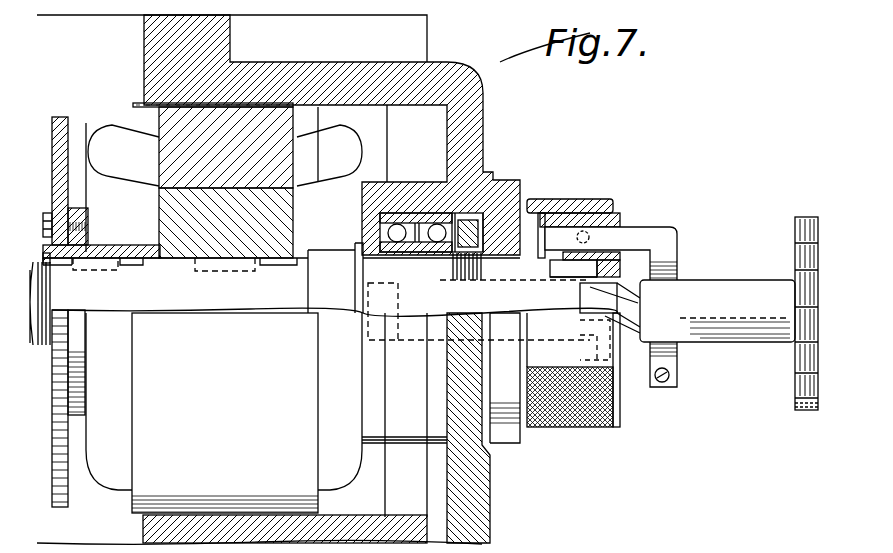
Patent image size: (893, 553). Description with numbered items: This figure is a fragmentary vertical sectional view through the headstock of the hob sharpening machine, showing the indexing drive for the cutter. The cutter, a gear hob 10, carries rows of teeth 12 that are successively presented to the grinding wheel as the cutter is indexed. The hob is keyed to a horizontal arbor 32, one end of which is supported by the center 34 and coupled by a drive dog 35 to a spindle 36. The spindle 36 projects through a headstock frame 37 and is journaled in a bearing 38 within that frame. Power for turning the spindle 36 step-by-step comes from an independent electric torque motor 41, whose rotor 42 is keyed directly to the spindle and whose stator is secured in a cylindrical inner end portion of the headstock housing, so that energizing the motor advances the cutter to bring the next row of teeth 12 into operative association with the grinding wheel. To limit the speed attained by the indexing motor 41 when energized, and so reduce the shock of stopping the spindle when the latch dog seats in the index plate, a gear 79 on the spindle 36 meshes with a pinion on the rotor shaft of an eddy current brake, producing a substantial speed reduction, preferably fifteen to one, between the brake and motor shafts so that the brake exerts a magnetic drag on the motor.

The gear hob 10 is at (790, 392).
The teeth 12 is at (793, 275).
The horizontal arbor 32 is at (716, 330).
The center 34 is at (617, 326).
The drive dog 35 is at (670, 240).
The spindle 36 is at (256, 300).
The headstock frame 37 is at (376, 62).
The bearing 38 is at (397, 243).
The electric torque motor 41 is at (112, 122).
The rotor 42 is at (174, 227).
The gear 79 is at (62, 117).